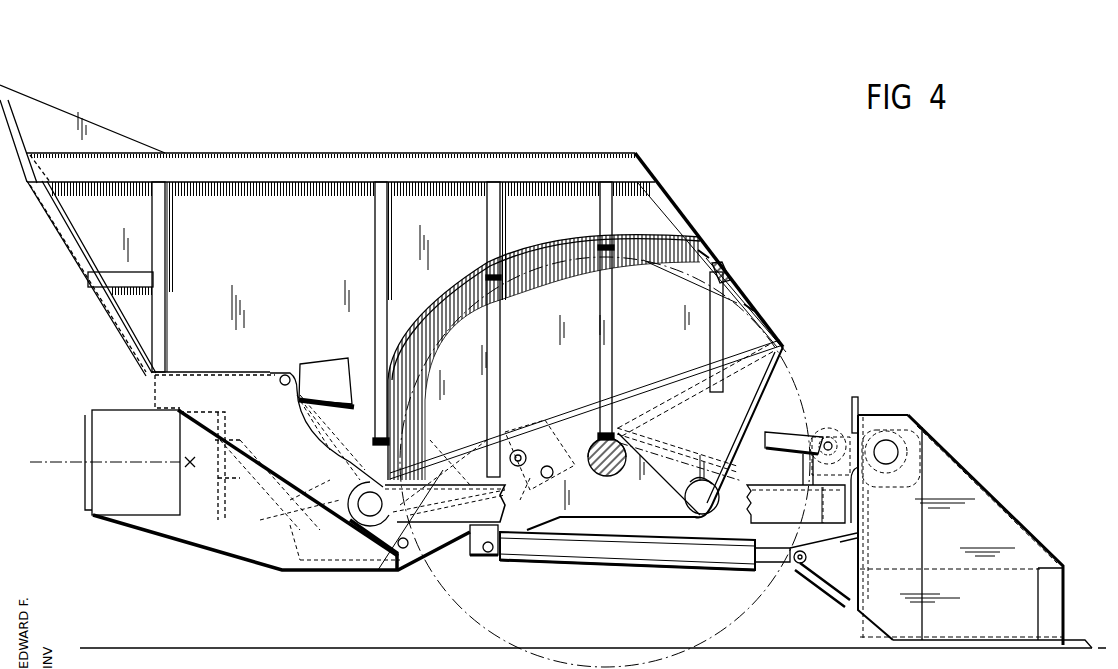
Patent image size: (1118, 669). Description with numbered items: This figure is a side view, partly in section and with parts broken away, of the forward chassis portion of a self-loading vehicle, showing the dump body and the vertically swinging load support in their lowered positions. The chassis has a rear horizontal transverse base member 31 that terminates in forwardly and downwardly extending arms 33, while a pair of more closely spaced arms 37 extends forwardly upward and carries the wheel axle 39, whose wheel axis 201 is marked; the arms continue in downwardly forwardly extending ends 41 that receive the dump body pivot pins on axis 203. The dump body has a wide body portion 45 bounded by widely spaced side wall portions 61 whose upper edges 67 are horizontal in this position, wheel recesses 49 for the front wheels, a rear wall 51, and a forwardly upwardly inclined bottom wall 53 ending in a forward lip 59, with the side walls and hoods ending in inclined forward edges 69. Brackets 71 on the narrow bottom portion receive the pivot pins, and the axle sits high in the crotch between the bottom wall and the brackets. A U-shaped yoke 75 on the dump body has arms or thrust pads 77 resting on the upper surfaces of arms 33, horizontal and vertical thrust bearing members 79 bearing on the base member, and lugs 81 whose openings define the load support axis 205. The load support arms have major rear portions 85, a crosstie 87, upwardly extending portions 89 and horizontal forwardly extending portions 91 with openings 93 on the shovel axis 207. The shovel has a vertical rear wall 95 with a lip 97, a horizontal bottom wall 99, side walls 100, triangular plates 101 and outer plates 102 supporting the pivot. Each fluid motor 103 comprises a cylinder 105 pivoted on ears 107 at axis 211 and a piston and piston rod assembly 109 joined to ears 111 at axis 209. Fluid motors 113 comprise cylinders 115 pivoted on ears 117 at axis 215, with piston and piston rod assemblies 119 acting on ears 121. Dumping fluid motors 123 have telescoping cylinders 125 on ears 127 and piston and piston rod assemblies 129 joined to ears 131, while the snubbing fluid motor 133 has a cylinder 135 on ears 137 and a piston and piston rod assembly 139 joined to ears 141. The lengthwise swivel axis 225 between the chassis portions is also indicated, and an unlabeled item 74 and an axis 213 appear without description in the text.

The base member 31 is at (105, 427).
The arms 33 is at (205, 533).
The arms 37 is at (412, 560).
The wheel axle 39 is at (622, 466).
The downwardly forwardly extending ends 41 is at (648, 512).
The wide body portion 45 is at (315, 195).
The wheel recesses 49 is at (676, 247).
The rear wall 51 is at (88, 250).
The bottom wall 53 is at (657, 373).
The forward lip 59 is at (779, 338).
The side wall portions 61 is at (420, 195).
The upper edges 67 is at (240, 153).
The forward edges 69 is at (729, 273).
The brackets 71 is at (742, 410).
The roller bracket 74 is at (700, 492).
The U-shaped yoke 75 is at (186, 382).
The arms or thrust pads 77 is at (266, 448).
The thrust bearing members 79 is at (152, 400).
The lugs 81 is at (360, 523).
The major rear portions 85 is at (752, 490).
The crosstie 87 is at (835, 504).
The upwardly extending portions 89 is at (825, 474).
The horizontal forwardly extending portions 91 is at (860, 432).
The openings 93 is at (892, 458).
The rear wall 95 is at (858, 553).
The lip 97 is at (853, 397).
The bottom wall 99 is at (966, 637).
The side walls 100 is at (1000, 537).
The triangular plate 101 is at (978, 505).
The plate 102 is at (968, 470).
The fluid motor 103 is at (672, 557).
The cylinder 105 is at (583, 552).
The ears 107 is at (473, 535).
The piston and piston rod assembly 109 is at (770, 557).
The ears 111 is at (830, 577).
The fluid motors 113 is at (322, 363).
The cylinder 115 is at (343, 360).
The ears 117 is at (268, 372).
The piston and piston rod assembly 119 is at (773, 437).
The ears 121 is at (830, 434).
The fluid motors 123 is at (457, 473).
The telescoping cylinders 125 is at (460, 473).
The ears 127 is at (388, 553).
The piston and piston rod assembly 129 is at (518, 450).
The ears 131 is at (548, 430).
The fluid motor 133 is at (303, 500).
The cylinder 135 is at (332, 439).
The ears 137 is at (291, 572).
The piston and piston rod assembly 139 is at (538, 474).
The ears 141 is at (562, 466).
The axis 201 is at (607, 462).
The axis 203 is at (707, 513).
The axis 205 is at (366, 492).
The axis 207 is at (887, 452).
The axis 209 is at (808, 557).
The axis 211 is at (488, 553).
The pivot pin 213 is at (825, 443).
The axis 215 is at (281, 383).
The axis 225 is at (60, 460).